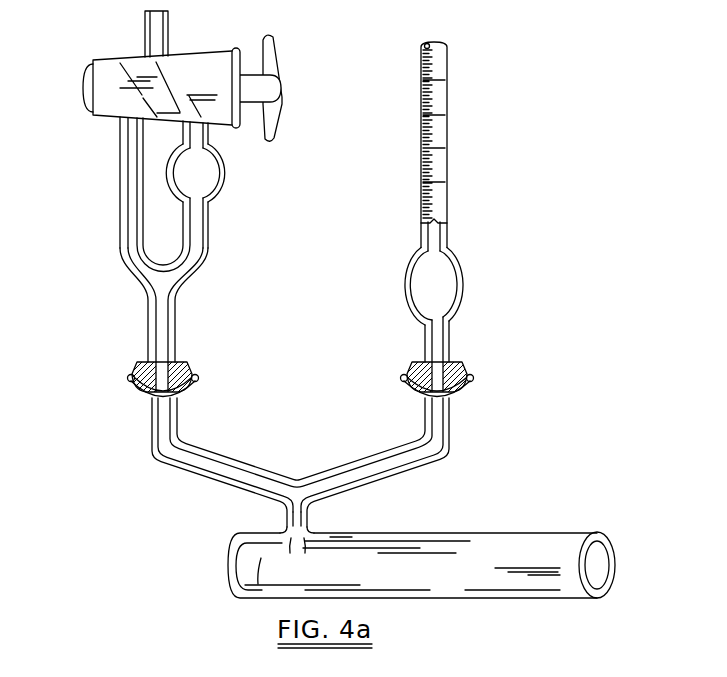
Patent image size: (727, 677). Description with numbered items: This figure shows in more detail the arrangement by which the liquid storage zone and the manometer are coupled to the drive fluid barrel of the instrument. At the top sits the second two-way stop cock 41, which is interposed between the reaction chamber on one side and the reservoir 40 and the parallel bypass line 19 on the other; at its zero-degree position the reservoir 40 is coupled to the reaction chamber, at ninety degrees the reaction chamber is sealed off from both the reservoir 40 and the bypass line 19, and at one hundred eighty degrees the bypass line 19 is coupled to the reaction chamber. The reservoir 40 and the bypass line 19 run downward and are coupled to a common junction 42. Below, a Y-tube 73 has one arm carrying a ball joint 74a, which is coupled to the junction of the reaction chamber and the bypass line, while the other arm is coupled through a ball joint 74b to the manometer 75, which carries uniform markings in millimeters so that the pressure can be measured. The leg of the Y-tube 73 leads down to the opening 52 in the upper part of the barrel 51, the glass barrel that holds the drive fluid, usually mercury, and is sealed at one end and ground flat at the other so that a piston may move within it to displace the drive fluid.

The second two-way stop cock 41 is at (87, 91).
The bypass line 19 is at (121, 227).
The reservoir 40 is at (183, 184).
The common junction 42 is at (152, 333).
The ball joint 74a is at (186, 401).
The Y-tube 73 is at (373, 462).
The opening 52 is at (308, 519).
The barrel 51 is at (469, 534).
The manometer 75 is at (462, 303).
The ball joint 74b is at (466, 387).